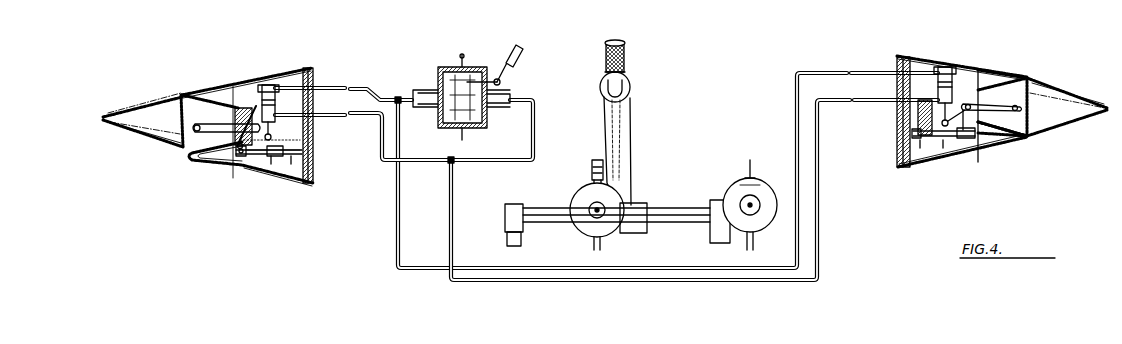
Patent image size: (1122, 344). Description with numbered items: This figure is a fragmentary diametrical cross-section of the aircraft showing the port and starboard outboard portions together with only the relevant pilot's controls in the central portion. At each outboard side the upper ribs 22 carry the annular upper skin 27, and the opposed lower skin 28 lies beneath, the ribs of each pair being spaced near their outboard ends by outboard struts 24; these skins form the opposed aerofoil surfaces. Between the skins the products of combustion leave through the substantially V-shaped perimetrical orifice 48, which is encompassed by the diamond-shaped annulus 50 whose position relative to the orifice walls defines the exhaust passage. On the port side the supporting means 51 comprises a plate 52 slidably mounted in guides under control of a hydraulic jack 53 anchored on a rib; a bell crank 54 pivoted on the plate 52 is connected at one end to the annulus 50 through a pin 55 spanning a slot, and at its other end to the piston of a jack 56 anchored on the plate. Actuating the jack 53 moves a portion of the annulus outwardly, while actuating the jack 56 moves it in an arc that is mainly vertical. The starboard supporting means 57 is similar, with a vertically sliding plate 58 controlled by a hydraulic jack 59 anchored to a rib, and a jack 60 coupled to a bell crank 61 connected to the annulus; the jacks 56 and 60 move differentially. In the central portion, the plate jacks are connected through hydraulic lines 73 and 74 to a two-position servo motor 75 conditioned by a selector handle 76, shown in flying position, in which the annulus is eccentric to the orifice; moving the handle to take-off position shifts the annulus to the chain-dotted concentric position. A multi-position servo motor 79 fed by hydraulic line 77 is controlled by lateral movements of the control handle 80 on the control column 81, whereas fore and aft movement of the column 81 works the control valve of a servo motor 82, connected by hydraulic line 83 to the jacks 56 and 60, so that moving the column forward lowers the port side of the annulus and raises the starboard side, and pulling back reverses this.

The upper ribs 22 is at (227, 149).
The outboard struts 24 is at (314, 128).
The upper skin 27 is at (253, 83).
The lower skin 28 is at (314, 182).
The perimetrical orifice 48 is at (175, 162).
The annulus 50 is at (157, 116).
The port supporting means 51 is at (257, 162).
The plate 52 is at (236, 152).
The hydraulic jack 53 is at (268, 85).
The bell crank 54 is at (223, 126).
The pin 55 is at (190, 131).
The port jack 56 is at (289, 159).
The starboard supporting means 57 is at (968, 153).
The plate 58 is at (953, 141).
The hydraulic jack 59 is at (945, 67).
The starboard jack 60 is at (912, 134).
The bell crank 61 is at (995, 106).
The hydraulic line 73 is at (366, 86).
The hydraulic line 74 is at (455, 175).
The two-position servo motor 75 is at (440, 72).
The selector handle 76 is at (522, 50).
The hydraulic line 77 is at (599, 209).
The multi-position servo motor 79 is at (577, 189).
The control handle 80 is at (625, 58).
The control column 81 is at (633, 110).
The servo motor 82 is at (732, 185).
The hydraulic line 83 is at (751, 203).